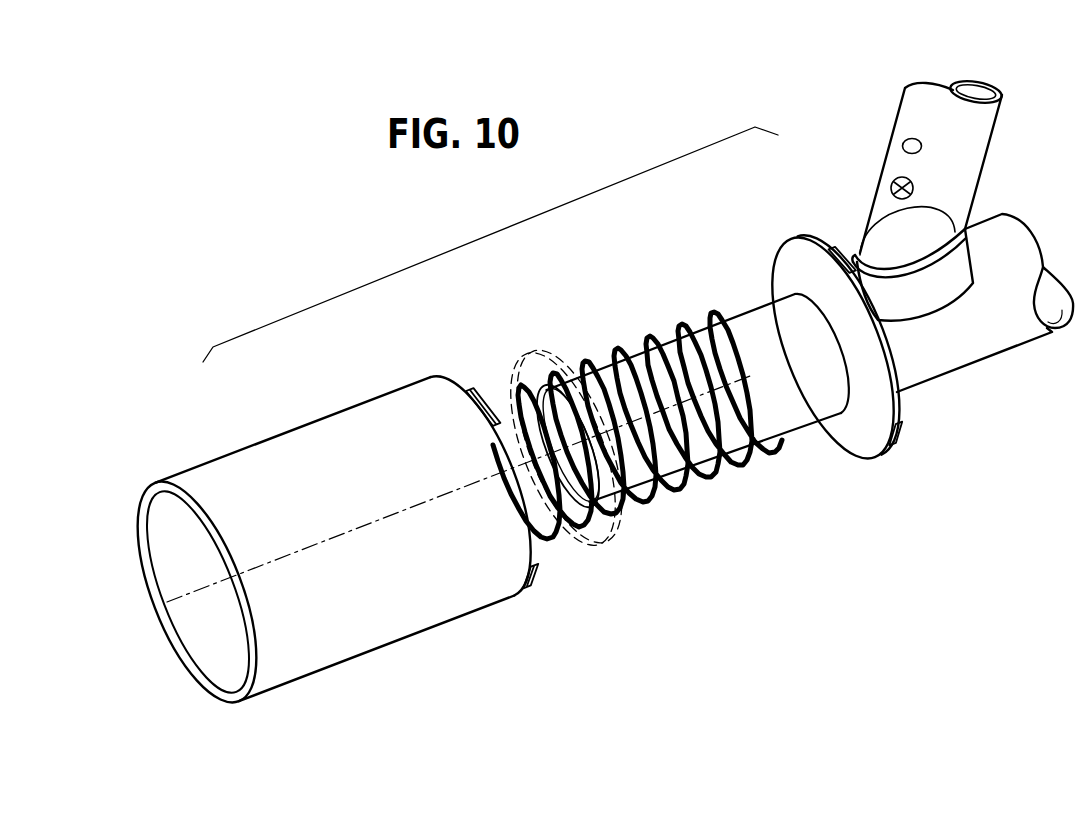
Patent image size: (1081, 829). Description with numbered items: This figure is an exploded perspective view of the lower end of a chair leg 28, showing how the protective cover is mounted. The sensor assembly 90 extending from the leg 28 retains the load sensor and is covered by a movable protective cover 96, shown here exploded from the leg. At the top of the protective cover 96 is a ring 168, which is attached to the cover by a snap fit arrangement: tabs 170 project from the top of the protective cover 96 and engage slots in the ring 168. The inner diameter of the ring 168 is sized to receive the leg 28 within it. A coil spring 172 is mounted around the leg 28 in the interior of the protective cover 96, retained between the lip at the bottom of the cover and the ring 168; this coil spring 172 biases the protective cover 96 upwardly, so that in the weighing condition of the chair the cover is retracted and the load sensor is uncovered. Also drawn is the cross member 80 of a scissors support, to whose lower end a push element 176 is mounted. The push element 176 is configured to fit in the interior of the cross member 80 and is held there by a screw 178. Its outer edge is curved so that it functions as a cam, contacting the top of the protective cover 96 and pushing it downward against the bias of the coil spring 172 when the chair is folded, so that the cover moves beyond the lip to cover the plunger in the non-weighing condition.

The leg 28 is at (818, 359).
The cross member 80 is at (928, 100).
The sensor assembly 90 is at (230, 407).
The protective cover 96 is at (391, 658).
The ring 168 is at (808, 252).
The tabs 170 is at (474, 386).
The coil spring 172 is at (644, 340).
The push element 176 is at (944, 288).
The screw 178 is at (888, 187).